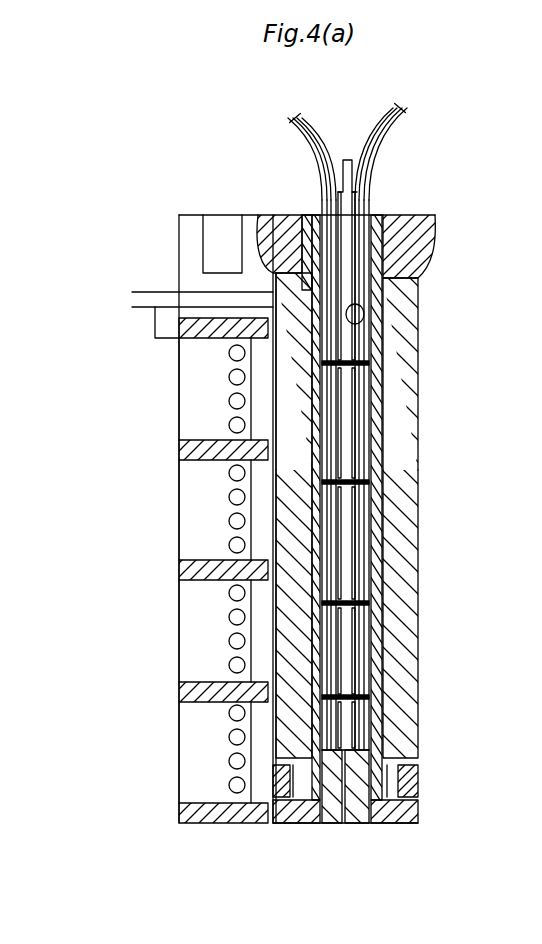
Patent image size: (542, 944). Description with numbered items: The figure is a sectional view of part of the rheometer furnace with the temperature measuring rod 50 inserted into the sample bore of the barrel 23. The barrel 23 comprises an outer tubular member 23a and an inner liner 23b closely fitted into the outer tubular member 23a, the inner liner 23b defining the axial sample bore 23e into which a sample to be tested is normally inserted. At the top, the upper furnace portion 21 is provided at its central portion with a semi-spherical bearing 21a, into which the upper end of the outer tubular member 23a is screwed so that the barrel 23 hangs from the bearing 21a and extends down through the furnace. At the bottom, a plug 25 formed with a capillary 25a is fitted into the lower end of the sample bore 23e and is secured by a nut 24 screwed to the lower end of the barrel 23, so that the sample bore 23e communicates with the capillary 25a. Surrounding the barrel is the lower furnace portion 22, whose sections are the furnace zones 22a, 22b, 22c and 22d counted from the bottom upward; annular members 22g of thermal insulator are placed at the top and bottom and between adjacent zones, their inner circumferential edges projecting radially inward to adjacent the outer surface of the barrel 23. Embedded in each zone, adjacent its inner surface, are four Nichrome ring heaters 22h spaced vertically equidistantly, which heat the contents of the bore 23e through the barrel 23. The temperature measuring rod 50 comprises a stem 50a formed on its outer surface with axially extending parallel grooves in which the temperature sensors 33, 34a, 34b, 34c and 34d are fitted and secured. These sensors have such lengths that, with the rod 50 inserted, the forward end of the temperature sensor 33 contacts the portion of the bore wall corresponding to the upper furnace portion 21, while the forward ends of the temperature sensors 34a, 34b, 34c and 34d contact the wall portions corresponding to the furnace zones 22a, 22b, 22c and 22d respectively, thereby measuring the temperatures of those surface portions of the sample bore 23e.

The upper furnace portion 21 is at (180, 238).
The semi-spherical bearing 21a is at (425, 249).
The lower furnace portion 22 is at (80, 561).
The furnace zone 22a is at (113, 744).
The furnace zone 22b is at (108, 644).
The furnace zone 22c is at (86, 512).
The furnace zone 22d is at (113, 367).
The annular member of thermal insulator 22g is at (182, 323).
The Nichrome ring heater 22h is at (230, 424).
The barrel 23 is at (402, 515).
The outer tubular member 23a is at (445, 440).
The inner liner 23b is at (417, 498).
The sample bore 23e is at (364, 313).
The nut 24 is at (288, 827).
The plug 25 is at (360, 827).
The capillary 25a is at (344, 795).
The temperature sensor 33 is at (378, 113).
The temperature sensor 34a is at (330, 680).
The temperature sensor 34b is at (330, 575).
The temperature sensor 34c is at (352, 428).
The temperature sensor 34d is at (360, 362).
The temperature measuring rod 50 is at (392, 644).
The stem 50a is at (345, 728).